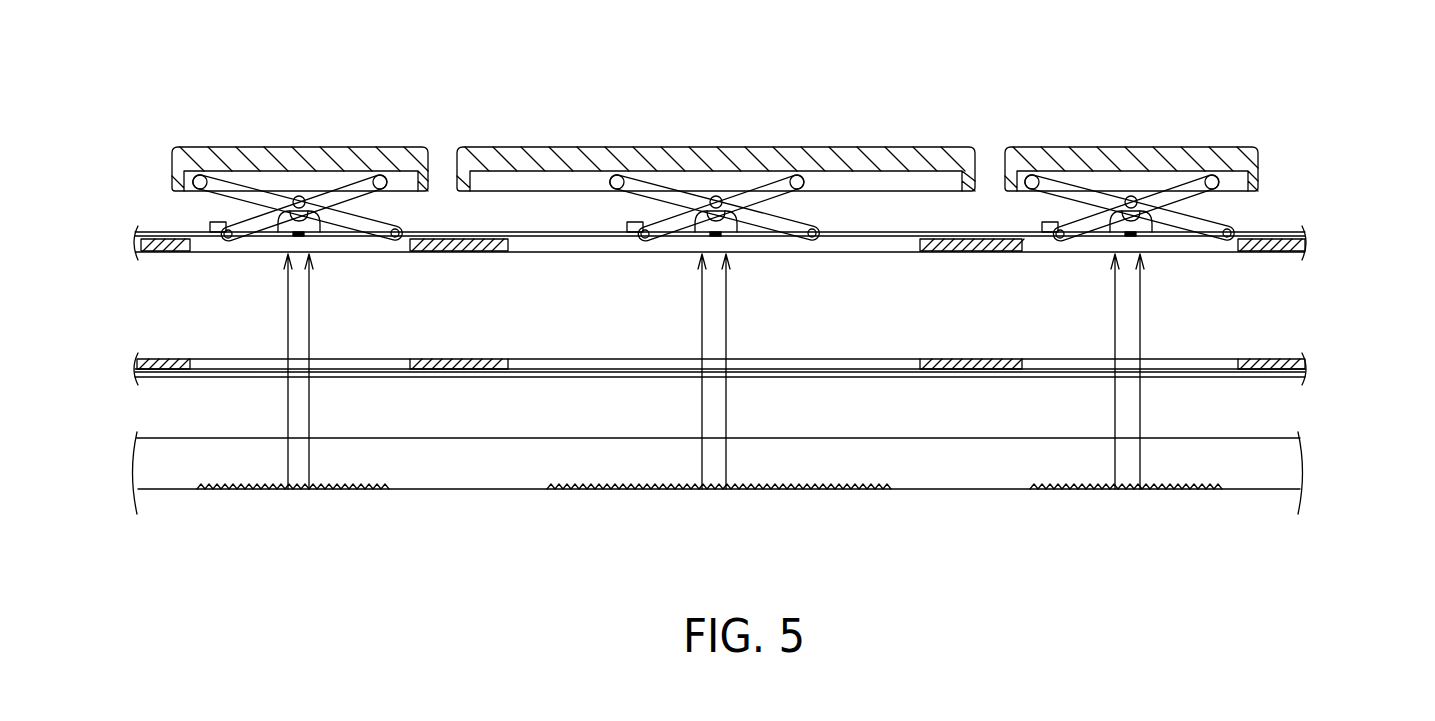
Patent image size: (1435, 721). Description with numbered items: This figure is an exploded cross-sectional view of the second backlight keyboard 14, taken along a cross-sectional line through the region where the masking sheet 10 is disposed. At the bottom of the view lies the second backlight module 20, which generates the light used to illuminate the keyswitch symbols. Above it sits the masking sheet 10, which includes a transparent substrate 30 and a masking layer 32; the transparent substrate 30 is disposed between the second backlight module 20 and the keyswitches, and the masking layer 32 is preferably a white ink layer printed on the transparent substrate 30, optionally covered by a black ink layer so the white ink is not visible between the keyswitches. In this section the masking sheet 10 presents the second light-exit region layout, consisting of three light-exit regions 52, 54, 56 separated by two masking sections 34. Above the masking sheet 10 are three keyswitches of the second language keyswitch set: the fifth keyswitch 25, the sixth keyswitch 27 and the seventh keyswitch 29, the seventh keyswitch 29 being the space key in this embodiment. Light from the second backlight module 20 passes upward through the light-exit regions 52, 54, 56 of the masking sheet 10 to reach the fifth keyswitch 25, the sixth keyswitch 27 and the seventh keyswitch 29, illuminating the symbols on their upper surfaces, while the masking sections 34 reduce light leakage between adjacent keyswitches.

The masking sheet 10 is at (1360, 310).
The second backlight keyboard 14 is at (212, 90).
The second backlight module 20 is at (128, 424).
The fifth keyswitch 25 is at (427, 130).
The sixth keyswitch 27 is at (1260, 130).
The seventh keyswitch 29 is at (955, 130).
The transparent substrate 30 is at (1300, 372).
The masking layer 32 is at (1303, 362).
The masking section 34 is at (450, 359).
The light-exit region 52 is at (223, 359).
The light-exit region 54 is at (590, 359).
The light-exit region 56 is at (1200, 361).